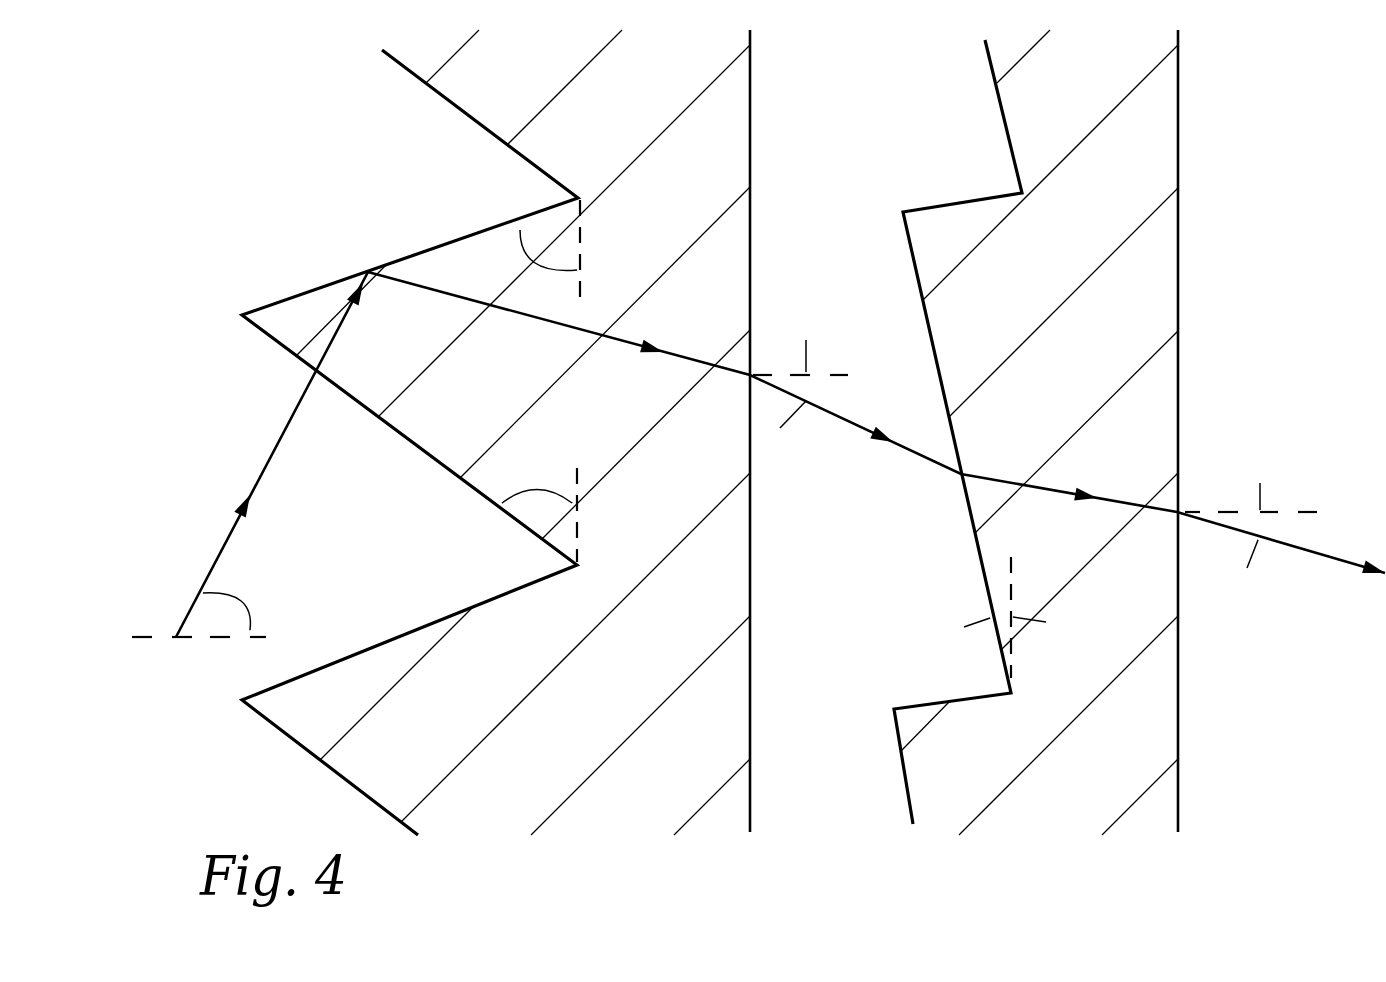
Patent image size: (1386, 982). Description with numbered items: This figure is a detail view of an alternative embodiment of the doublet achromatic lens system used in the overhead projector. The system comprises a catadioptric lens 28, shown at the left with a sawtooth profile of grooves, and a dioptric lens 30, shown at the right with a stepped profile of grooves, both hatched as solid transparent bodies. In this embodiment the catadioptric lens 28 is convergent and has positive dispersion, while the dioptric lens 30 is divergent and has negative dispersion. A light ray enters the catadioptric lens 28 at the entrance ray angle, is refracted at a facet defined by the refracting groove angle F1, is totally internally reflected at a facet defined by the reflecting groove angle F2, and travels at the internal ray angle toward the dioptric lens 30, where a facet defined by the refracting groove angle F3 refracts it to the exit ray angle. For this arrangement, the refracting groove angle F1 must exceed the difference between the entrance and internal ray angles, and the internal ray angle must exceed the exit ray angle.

The catadioptric lens 28 is at (490, 98).
The dioptric lens 30 is at (1130, 282).
The refracting groove angle of catadioptric lens F1 is at (539, 508).
The reflecting groove angle of catadioptric lens F2 is at (539, 249).
The refracting groove angle of dioptric lens F3 is at (988, 617).